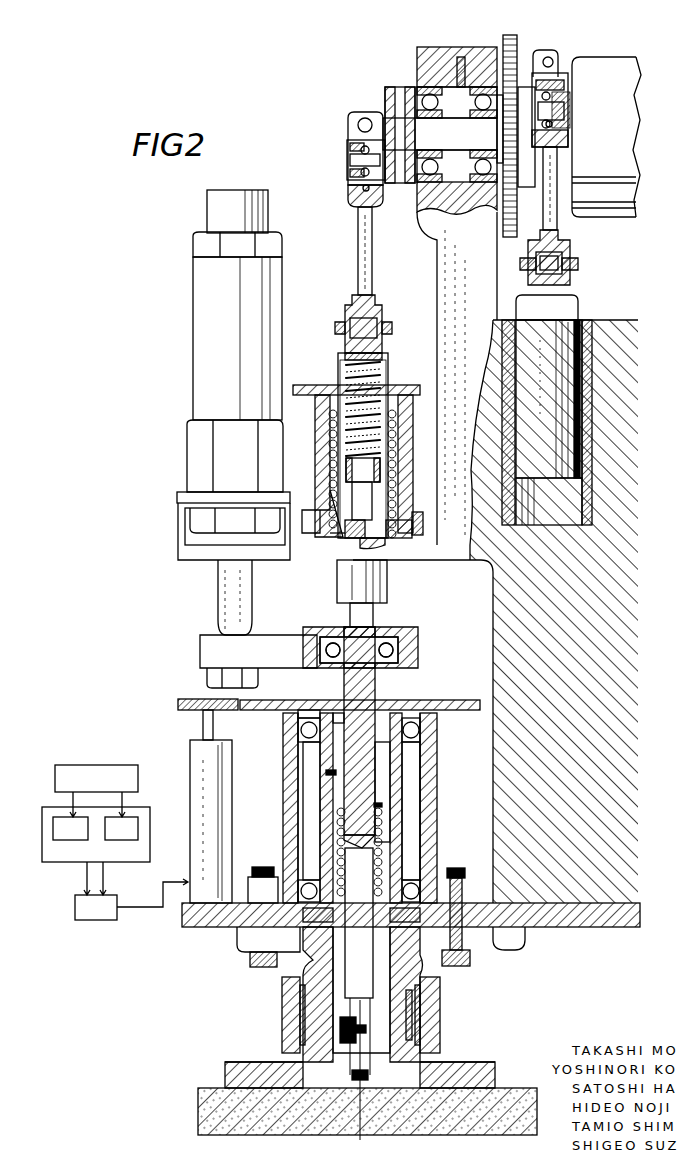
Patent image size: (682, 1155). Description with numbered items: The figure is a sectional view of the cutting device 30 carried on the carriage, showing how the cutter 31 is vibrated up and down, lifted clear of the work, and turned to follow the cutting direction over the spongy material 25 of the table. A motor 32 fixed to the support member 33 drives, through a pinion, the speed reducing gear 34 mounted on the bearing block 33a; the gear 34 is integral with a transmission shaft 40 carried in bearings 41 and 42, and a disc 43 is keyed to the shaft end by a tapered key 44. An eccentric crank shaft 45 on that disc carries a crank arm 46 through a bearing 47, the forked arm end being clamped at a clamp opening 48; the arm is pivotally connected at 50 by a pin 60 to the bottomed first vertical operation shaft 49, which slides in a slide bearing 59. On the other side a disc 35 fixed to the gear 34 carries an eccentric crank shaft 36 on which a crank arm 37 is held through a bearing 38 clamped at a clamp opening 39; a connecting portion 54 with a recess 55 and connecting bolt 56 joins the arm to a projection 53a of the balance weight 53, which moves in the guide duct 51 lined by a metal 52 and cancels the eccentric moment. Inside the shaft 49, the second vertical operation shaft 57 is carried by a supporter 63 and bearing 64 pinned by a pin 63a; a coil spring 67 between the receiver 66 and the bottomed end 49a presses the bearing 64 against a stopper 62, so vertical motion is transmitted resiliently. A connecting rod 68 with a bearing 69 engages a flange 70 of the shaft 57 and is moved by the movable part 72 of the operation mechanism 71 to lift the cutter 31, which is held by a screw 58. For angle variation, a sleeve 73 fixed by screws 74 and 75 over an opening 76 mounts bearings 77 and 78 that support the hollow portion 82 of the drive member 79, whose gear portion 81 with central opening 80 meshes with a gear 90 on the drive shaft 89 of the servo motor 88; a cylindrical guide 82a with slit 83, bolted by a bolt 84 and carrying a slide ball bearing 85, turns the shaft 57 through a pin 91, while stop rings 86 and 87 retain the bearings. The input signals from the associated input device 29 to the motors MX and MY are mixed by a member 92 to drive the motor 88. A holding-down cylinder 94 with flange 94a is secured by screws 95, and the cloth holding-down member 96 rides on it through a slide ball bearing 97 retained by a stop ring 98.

The spongy material 25 is at (522, 1095).
The control unit 29 is at (78, 772).
The cutting device 30 is at (176, 254).
The cutter 31 is at (375, 1105).
The motor 32 is at (625, 57).
The support member 33 is at (490, 566).
The bearing block 33a is at (446, 246).
The speed reducing gear 34 is at (512, 52).
The disc 35 is at (522, 172).
The crank shaft 36 is at (560, 100).
The crank arm 37 is at (555, 187).
The bearing 38 is at (556, 125).
The clamp opening 39 is at (553, 62).
The transmission shaft 40 is at (408, 128).
The bearing 41 is at (424, 95).
The bearing 42 is at (482, 95).
The disc 43 is at (388, 90).
The tapered key 44 is at (390, 108).
The crank shaft 45 is at (347, 165).
The crank arm 46 is at (358, 243).
The bearing 47 is at (350, 188).
The clamp opening 48 is at (358, 124).
The first vertical operation shaft 49 is at (390, 377).
The bottomed end 49a is at (345, 357).
The pivotal connection 50 is at (385, 310).
The guide duct 51 is at (578, 440).
The metal 52 is at (582, 513).
The balance weight 53 is at (528, 372).
The projection 53a is at (565, 298).
The connecting portion 54 is at (592, 281).
The recess 55 is at (570, 248).
The connecting bolt 56 is at (565, 265).
The second vertical operation shaft 57 is at (400, 493).
The screw 58 is at (338, 1040).
The slide bearing 59 is at (395, 434).
The pin 60 is at (352, 320).
The stopper 62 is at (392, 552).
The supporter 63 is at (338, 525).
The pin 63a is at (423, 525).
The bearing 64 is at (378, 532).
The receiver 66 is at (386, 466).
The coil spring 67 is at (348, 380).
The connecting rod 68 is at (274, 640).
The bearing 69 is at (418, 658).
The flange 70 is at (385, 630).
The operation mechanism 71 is at (200, 352).
The movable part 72 is at (224, 606).
The sleeve 73 is at (430, 805).
The screw 74 is at (468, 872).
The screw 75 is at (266, 866).
The opening 76 is at (490, 966).
The bearing 77 is at (424, 730).
The bearing 78 is at (465, 891).
The drive member 79 is at (396, 780).
The opening 80 is at (340, 712).
The gear portion 81 is at (452, 705).
The hollow portion 82 is at (396, 836).
The cylindrical guide 82a is at (306, 712).
The slit 83 is at (386, 760).
The bolt 84 is at (324, 772).
The slide ball bearing 85 is at (338, 820).
The stop ring 86 is at (300, 911).
The stop ring 87 is at (315, 922).
The servo motor or pulse motor 88 is at (196, 782).
The drive shaft 89 is at (203, 723).
The gear 90 is at (194, 700).
The pin 91 is at (383, 805).
The member 92 is at (92, 918).
The holding-down cylinder 94 is at (440, 1045).
The flange 94a is at (490, 930).
The screw 95 is at (255, 960).
The cloth holding-down member 96 is at (412, 1045).
The slide ball bearing 97 is at (425, 1018).
The stop ring 98 is at (290, 996).
The motor MX is at (96, 834).
The motor MY is at (121, 828).